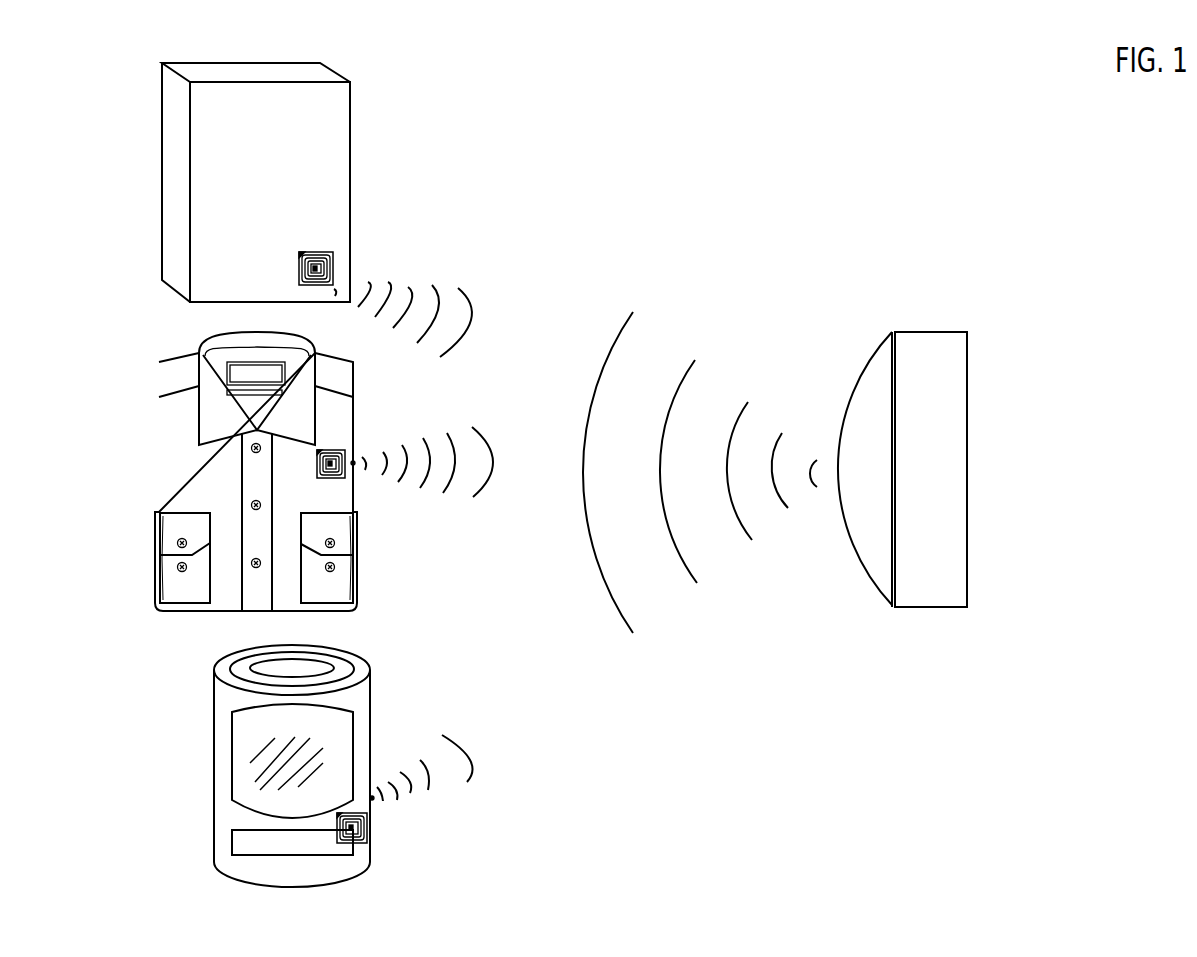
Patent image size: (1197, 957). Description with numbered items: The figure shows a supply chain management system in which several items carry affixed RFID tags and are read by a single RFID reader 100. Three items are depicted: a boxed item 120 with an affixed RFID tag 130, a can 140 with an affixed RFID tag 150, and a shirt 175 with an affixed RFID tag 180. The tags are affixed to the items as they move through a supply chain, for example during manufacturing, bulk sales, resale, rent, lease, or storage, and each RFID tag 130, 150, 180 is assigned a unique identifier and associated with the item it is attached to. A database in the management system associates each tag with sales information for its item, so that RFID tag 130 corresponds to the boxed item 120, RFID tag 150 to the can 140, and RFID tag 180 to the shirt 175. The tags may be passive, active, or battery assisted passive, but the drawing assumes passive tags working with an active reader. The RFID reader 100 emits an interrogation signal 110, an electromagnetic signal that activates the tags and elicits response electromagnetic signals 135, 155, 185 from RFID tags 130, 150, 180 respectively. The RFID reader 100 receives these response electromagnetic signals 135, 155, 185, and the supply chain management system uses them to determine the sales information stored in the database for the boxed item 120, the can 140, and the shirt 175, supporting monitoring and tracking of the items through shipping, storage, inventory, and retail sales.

The RFID reader 100 is at (935, 332).
The interrogation signal 110 is at (703, 302).
The boxed item 120 is at (320, 63).
The RFID tag 130 is at (300, 252).
The response electromagnetic signal 135 is at (405, 257).
The can 140 is at (360, 657).
The RFID tag 150 is at (367, 838).
The response electromagnetic signal 155 is at (428, 802).
The shirt 175 is at (159, 362).
The RFID tag 180 is at (345, 478).
The response electromagnetic signal 185 is at (455, 500).